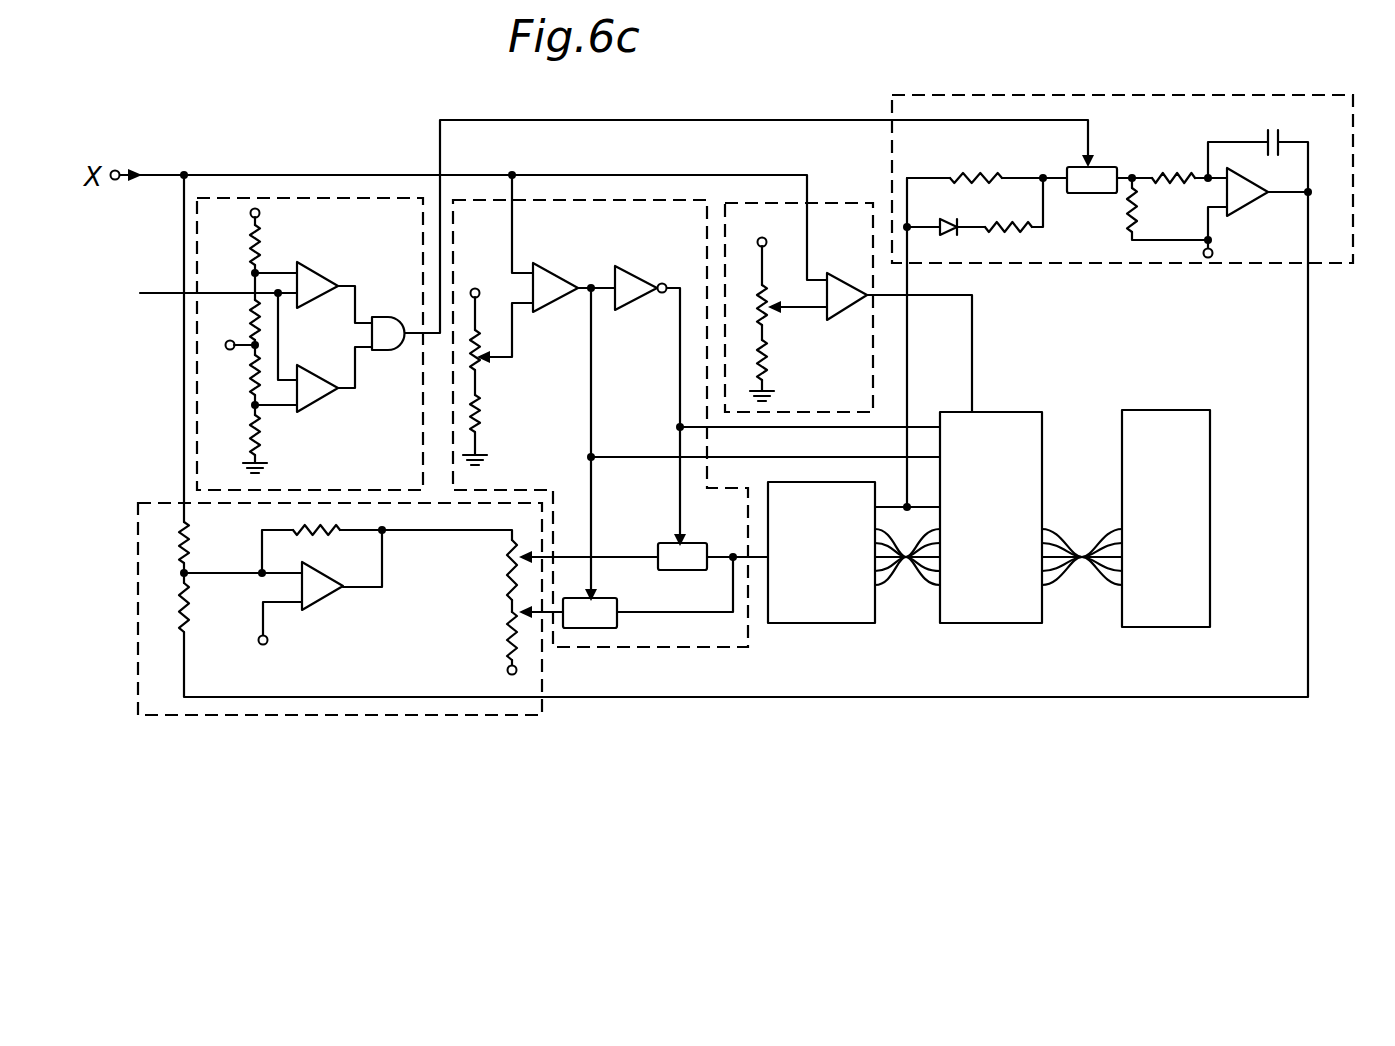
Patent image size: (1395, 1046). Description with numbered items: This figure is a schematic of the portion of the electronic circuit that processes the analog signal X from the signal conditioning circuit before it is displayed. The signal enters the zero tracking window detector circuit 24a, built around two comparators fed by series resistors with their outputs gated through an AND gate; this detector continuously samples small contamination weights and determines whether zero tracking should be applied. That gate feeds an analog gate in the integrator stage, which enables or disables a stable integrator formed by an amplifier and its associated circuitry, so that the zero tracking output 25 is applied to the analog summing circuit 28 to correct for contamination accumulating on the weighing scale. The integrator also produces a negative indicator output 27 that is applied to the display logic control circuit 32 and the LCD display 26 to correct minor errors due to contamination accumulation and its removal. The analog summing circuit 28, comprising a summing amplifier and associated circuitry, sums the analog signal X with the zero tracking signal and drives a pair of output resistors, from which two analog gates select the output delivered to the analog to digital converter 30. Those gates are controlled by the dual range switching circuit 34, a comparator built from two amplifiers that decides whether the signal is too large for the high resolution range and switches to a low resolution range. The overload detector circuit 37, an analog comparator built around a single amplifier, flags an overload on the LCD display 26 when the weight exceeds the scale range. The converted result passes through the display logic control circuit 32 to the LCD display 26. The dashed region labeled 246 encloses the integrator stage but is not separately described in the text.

The zero tracking window detector circuit 24a is at (372, 194).
The zero tracking output 25 is at (1142, 708).
The LCD display 26 is at (1210, 600).
The negative indicator output 27 is at (909, 364).
The analog summing circuit 28 is at (203, 724).
The analog to digital converter 30 is at (827, 624).
The display logic control circuit 32 is at (1012, 624).
The dual range switching circuit 34 is at (689, 196).
The overload detector circuit 37 is at (848, 200).
The integrator circuit 246 is at (1328, 272).